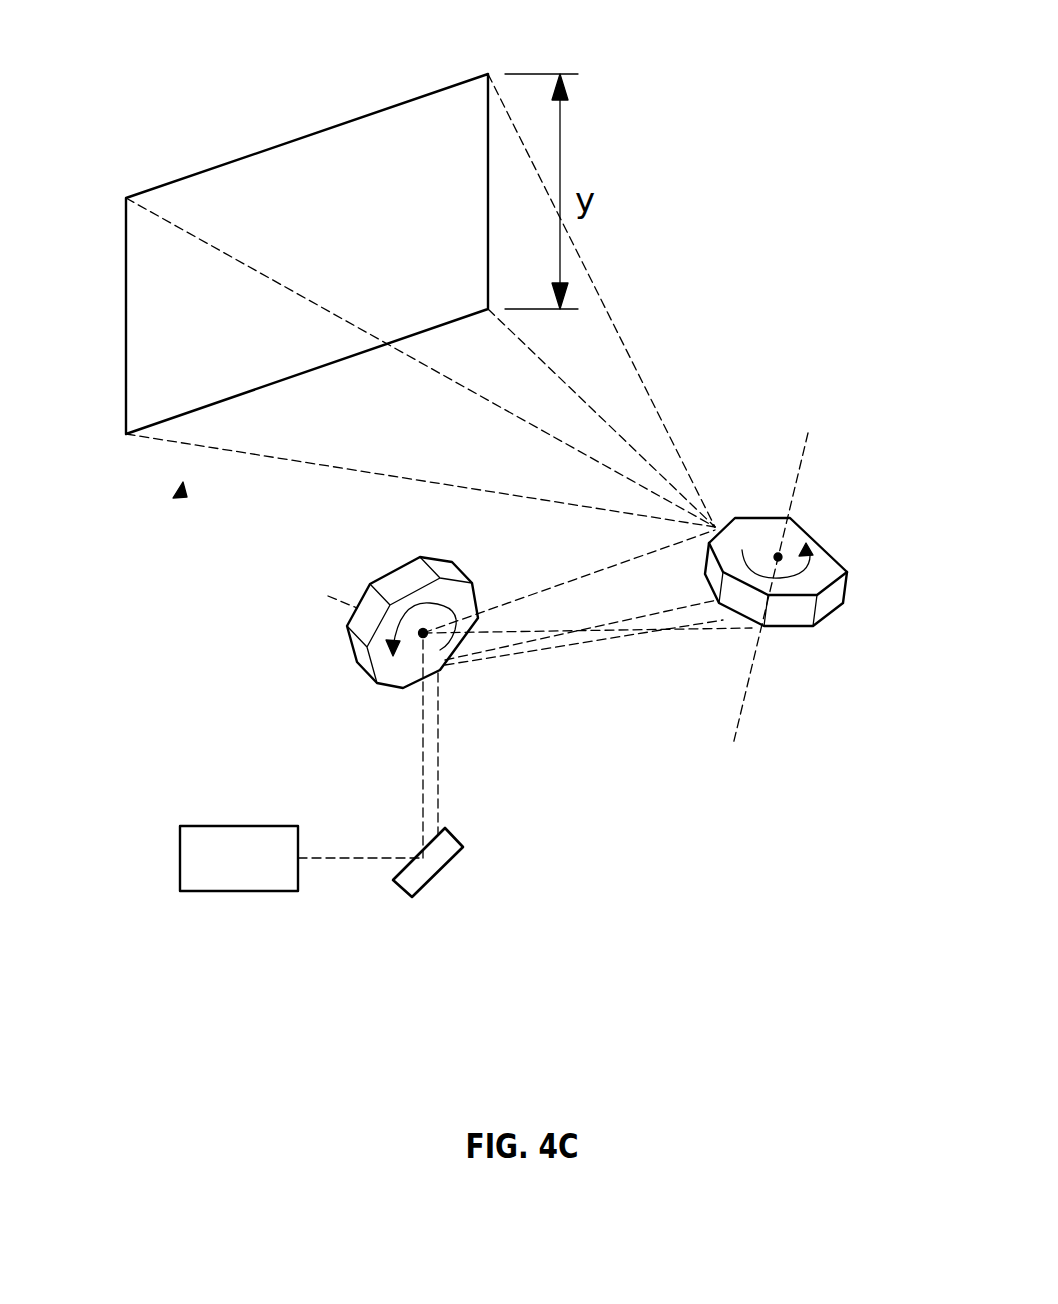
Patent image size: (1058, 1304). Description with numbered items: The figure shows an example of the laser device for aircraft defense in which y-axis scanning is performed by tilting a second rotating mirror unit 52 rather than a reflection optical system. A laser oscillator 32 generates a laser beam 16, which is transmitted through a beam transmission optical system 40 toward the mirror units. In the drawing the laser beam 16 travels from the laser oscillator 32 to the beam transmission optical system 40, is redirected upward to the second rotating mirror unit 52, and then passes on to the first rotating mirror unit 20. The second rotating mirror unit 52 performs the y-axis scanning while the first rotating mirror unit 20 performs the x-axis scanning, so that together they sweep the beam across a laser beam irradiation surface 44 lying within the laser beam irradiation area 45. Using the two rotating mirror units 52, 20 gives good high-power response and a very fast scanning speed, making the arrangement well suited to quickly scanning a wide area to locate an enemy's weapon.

The laser beam 16 is at (540, 593).
The rotating mirror unit 20 is at (823, 557).
The laser oscillator 32 is at (178, 858).
The beam transmission optical system 40 is at (438, 873).
The laser beam irradiation surface 44 is at (305, 136).
The laser beam irradiation area 45 is at (181, 486).
The second rotating mirror unit 52 is at (356, 608).